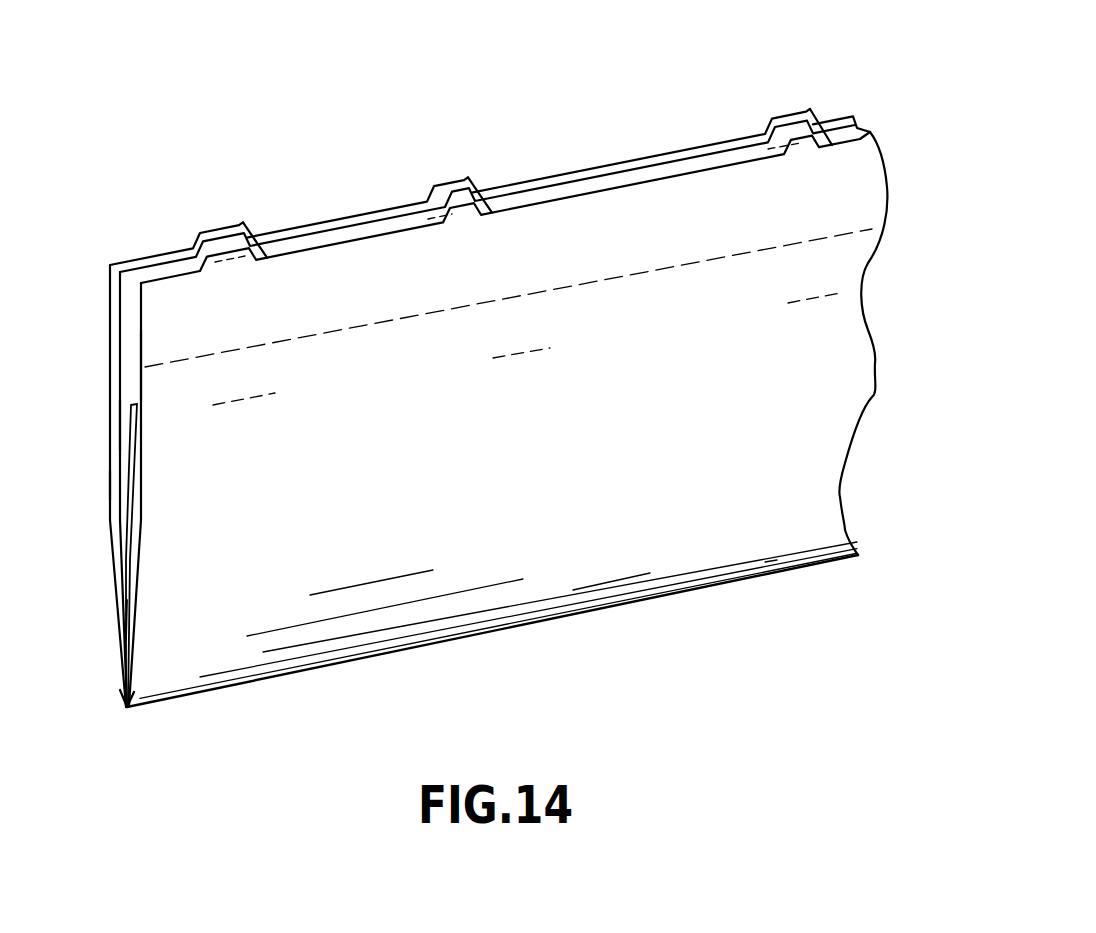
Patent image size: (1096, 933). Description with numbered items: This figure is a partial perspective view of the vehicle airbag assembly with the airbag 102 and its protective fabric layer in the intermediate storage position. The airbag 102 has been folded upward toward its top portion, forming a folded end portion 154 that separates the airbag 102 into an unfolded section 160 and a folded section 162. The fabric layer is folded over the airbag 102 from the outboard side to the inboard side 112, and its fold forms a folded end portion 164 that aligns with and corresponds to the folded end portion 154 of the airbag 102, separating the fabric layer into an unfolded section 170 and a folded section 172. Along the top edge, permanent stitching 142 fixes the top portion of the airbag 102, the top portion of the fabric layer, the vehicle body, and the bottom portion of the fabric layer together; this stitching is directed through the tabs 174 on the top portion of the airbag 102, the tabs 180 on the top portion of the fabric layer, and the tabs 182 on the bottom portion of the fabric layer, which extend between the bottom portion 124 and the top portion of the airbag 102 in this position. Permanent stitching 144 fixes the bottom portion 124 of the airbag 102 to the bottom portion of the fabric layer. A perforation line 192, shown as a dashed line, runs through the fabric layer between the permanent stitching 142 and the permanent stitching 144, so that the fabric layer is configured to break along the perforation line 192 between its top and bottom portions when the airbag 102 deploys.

The airbag 102 is at (138, 523).
The inboard side 112 is at (128, 362).
The bottom portion 124 is at (132, 425).
The permanent stitching 142 is at (272, 250).
The permanent stitching 144 is at (240, 400).
The folded end portion 154 is at (125, 615).
The unfolded section 160 is at (125, 462).
The folded section 162 is at (135, 600).
The folded end portion 164 is at (127, 707).
The unfolded section 170 is at (116, 483).
The folded section 172 is at (237, 620).
The tabs 174 is at (220, 245).
The tabs 180 is at (204, 232).
The tabs 182 is at (243, 268).
The perforation line 192 is at (823, 237).